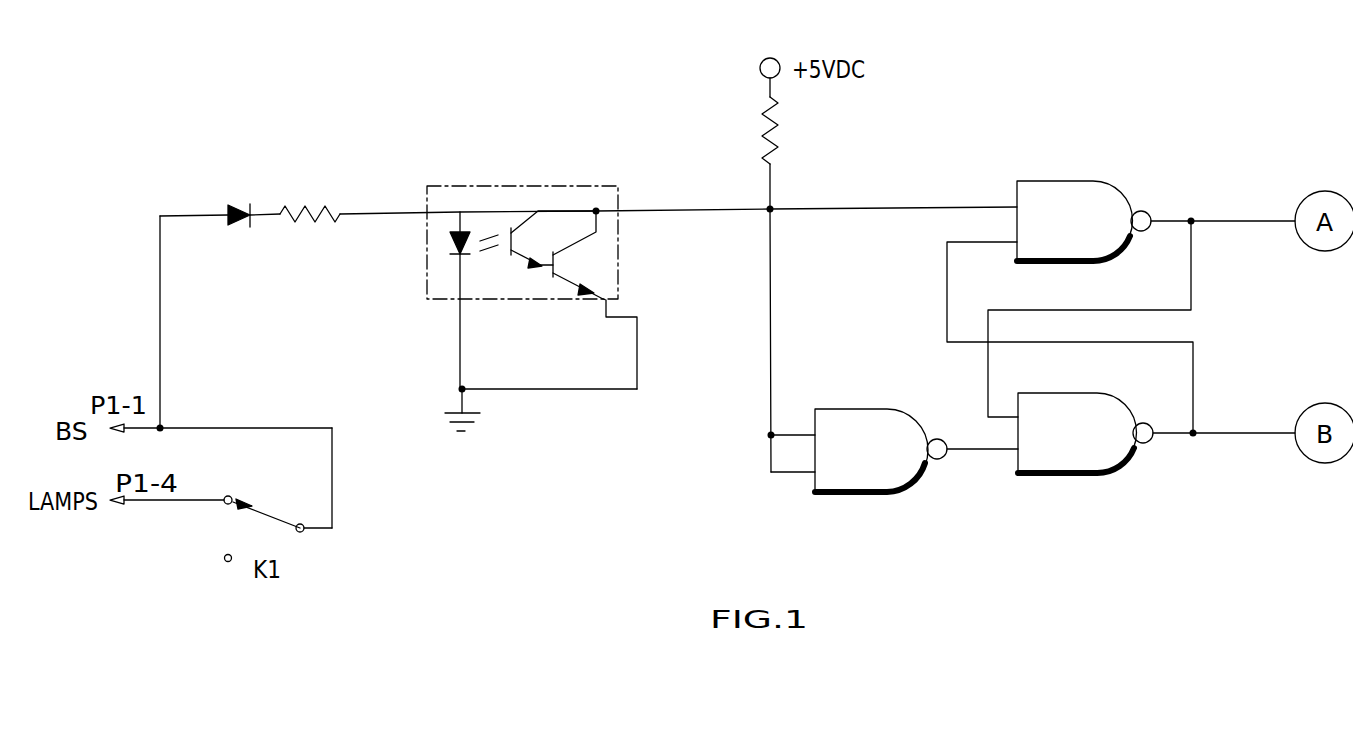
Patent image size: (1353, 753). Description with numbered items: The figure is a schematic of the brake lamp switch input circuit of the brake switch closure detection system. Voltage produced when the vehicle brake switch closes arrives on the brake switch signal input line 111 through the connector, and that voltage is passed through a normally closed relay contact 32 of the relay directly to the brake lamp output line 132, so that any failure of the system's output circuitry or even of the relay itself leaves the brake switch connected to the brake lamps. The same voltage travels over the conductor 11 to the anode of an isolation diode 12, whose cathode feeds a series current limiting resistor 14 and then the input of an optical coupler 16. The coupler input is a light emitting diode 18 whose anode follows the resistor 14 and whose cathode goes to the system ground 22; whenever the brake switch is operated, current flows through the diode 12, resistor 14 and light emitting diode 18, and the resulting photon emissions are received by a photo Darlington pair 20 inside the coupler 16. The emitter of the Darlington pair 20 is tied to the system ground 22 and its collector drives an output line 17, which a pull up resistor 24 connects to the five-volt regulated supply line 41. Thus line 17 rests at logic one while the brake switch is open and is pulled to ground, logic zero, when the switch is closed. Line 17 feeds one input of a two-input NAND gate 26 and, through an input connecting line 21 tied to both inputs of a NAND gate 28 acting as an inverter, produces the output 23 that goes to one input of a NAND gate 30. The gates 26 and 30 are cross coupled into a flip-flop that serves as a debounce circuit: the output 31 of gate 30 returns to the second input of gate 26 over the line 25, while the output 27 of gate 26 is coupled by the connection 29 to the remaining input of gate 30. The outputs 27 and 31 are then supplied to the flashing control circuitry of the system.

The conductor 11 is at (162, 333).
The isolation diode 12 is at (250, 202).
The current limiting resistor 14 is at (328, 205).
The optical coupler 16 is at (520, 185).
The output line 17 is at (860, 208).
The light emitting diode 18 is at (448, 240).
The photo Darlington pair 20 is at (575, 263).
The system ground 22 is at (460, 411).
The input connecting line 21 is at (769, 402).
The output of NAND gate 28 23 is at (978, 452).
The pull up resistor 24 is at (765, 118).
The line 25 is at (950, 283).
The NAND gate 26 is at (1075, 189).
The output of NAND gate 26 27 is at (1255, 220).
The NAND gate 28 is at (837, 418).
The feedback line 29 is at (1195, 280).
The NAND gate 30 is at (1085, 457).
The output of NAND gate 30 31 is at (1256, 432).
The normally closed relay contact 32 is at (272, 512).
The 5-volt regulated supply line 41 is at (774, 57).
The brake switch signal input line 111 is at (148, 431).
The brake lamp output line 132 is at (176, 503).